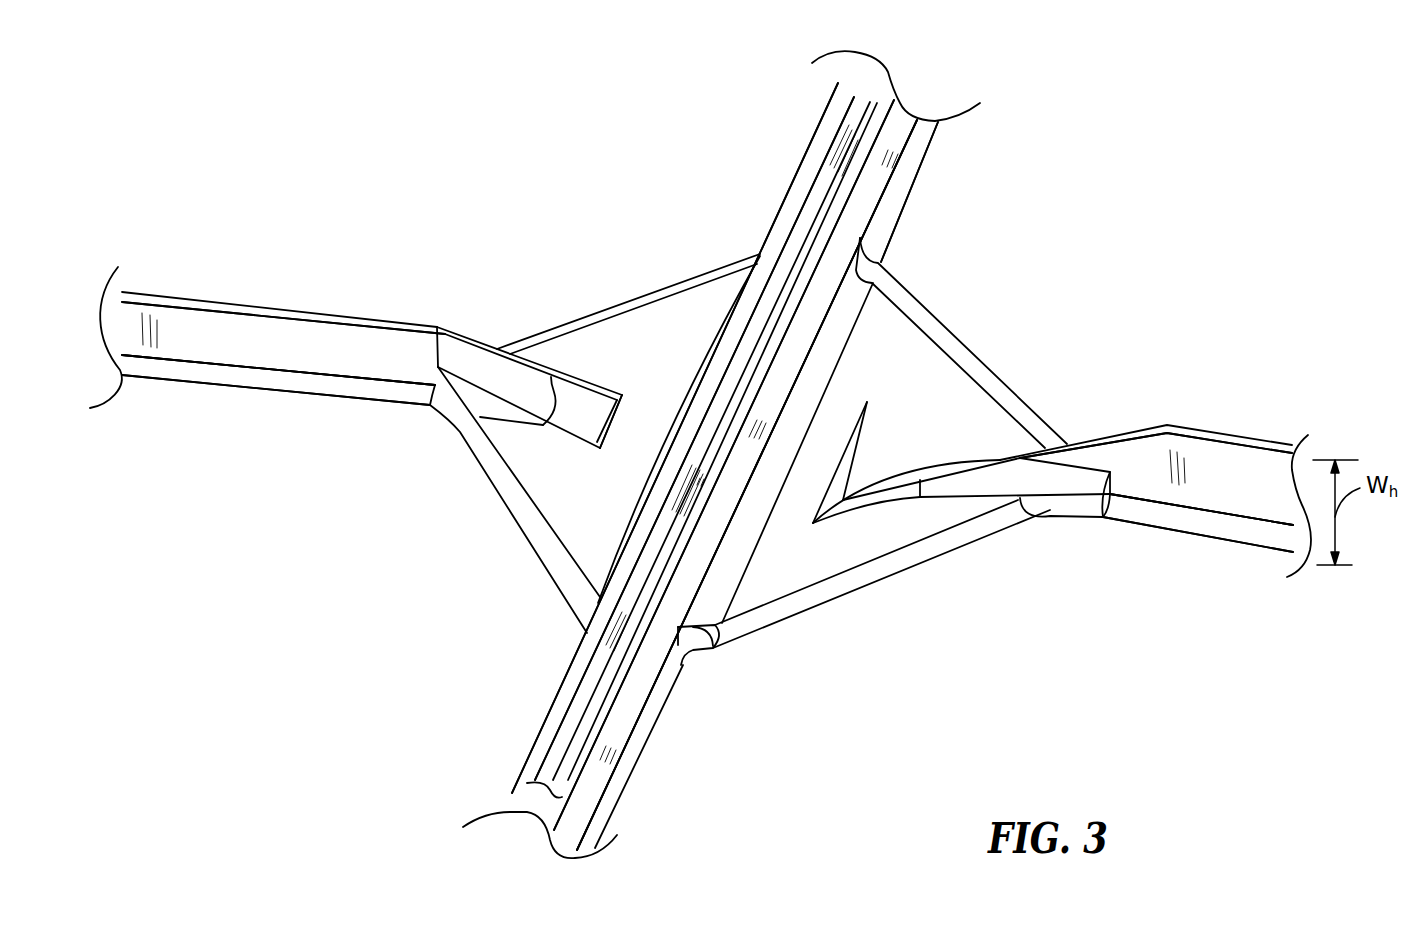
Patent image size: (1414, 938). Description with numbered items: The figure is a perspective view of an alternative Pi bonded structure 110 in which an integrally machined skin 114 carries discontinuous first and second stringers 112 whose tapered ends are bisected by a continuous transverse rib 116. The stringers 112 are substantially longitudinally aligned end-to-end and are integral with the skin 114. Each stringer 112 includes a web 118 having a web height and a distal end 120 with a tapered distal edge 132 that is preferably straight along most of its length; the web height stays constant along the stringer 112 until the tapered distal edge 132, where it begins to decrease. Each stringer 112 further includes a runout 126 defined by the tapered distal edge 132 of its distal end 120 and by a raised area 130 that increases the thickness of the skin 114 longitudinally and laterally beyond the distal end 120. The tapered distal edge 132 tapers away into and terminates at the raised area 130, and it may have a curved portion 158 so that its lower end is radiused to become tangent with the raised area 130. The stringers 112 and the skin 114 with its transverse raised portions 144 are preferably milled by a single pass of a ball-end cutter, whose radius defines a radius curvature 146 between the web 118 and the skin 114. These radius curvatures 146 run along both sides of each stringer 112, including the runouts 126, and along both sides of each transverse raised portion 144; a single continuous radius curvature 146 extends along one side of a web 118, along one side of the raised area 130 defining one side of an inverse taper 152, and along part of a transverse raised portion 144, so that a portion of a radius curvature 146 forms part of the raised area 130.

The Pi bonded structure 110 is at (1187, 173).
The stringer 112 is at (307, 282).
The skin 114 is at (459, 161).
The transverse rib 116 is at (807, 205).
The web 118 is at (205, 327).
The distal end 120 is at (512, 293).
The runout 126 is at (567, 315).
The raised area 130 is at (620, 357).
The tapered distal edge 132 is at (446, 331).
The transverse raised portion 144 is at (805, 173).
The radius curvature 146 is at (667, 293).
The inverse taper 152 is at (713, 272).
The curved portion 158 is at (607, 420).